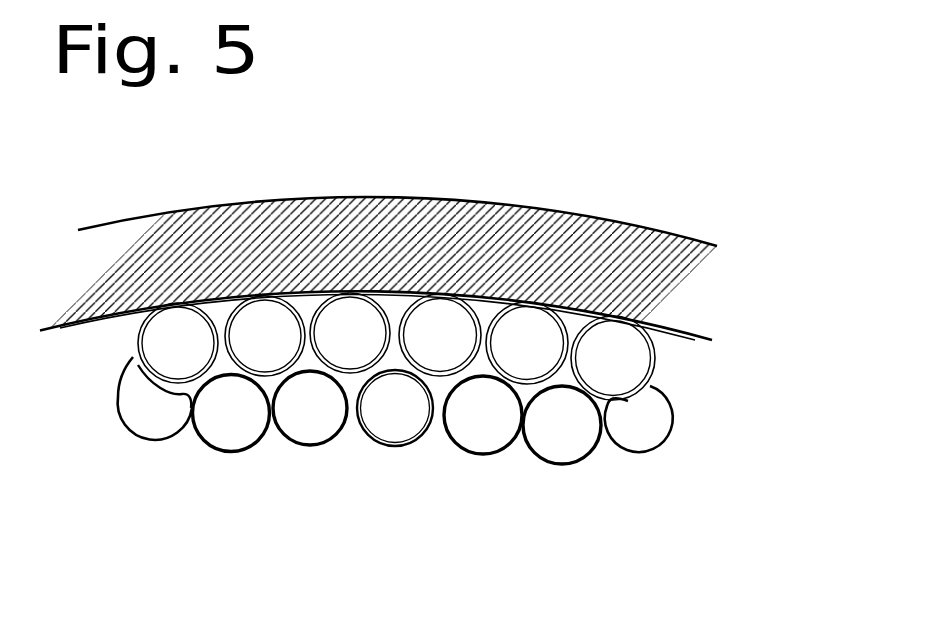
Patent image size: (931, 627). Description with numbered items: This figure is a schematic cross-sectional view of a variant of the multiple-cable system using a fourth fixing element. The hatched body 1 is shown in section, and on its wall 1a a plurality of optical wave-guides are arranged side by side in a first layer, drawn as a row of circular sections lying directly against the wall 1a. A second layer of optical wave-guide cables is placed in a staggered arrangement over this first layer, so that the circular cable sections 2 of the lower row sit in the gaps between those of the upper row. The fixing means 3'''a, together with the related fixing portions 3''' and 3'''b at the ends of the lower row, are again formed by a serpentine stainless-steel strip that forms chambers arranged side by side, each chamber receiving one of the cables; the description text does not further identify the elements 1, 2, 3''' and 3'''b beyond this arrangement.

The covering layer 1 is at (460, 235).
The wall 1a is at (98, 318).
The spherical body 2 is at (352, 333).
The layer of spherical bodies 3''' is at (127, 409).
The fixing means 3'''a is at (296, 472).
The edge spherical body 3'''b is at (711, 405).